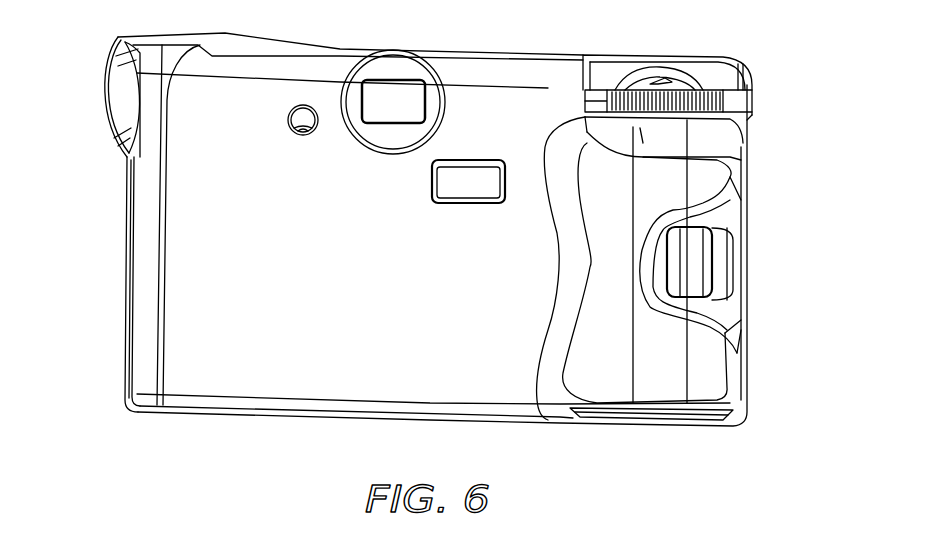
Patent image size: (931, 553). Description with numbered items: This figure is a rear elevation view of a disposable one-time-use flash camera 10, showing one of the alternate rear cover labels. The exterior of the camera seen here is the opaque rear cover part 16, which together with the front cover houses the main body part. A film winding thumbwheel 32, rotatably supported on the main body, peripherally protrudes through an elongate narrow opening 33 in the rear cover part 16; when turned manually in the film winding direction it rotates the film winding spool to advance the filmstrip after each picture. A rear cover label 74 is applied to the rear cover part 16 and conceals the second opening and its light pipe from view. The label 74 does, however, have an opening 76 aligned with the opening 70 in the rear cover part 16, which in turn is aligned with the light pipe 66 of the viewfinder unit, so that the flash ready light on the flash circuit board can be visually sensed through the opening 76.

The disposable one-time-use flash camera 10 is at (120, 237).
The rear cover part 16 is at (140, 313).
The film winding thumbwheel 32 is at (713, 67).
The elongate narrow opening 33 is at (740, 77).
The light pipe 66 is at (303, 120).
The opening 70 is at (288, 120).
The rear cover label 74 is at (382, 297).
The opening 76 is at (313, 135).